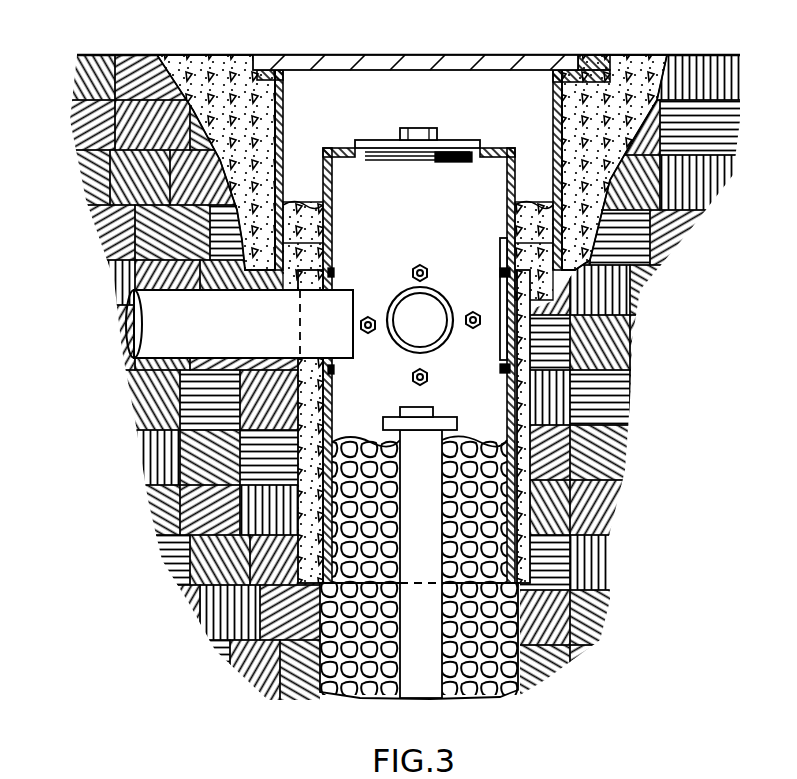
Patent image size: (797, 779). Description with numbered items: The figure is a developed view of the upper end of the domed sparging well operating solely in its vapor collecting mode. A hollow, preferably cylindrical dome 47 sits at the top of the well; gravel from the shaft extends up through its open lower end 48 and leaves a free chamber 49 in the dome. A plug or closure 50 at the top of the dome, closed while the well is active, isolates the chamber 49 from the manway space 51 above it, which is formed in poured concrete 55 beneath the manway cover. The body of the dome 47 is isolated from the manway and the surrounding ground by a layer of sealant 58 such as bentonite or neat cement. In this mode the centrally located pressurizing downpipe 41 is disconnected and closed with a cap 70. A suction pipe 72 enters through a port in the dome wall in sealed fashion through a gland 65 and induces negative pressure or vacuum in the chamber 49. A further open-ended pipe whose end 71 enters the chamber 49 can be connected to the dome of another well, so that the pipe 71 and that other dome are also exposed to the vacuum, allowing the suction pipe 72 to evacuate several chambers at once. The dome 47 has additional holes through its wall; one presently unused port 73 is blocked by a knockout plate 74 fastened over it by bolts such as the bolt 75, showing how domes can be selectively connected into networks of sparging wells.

The downpipe 41 is at (415, 698).
The dome 47 is at (516, 156).
The open lower end 48 is at (265, 643).
The chamber 49 is at (152, 452).
The closure 50 is at (373, 140).
The manway space 51 is at (430, 102).
The poured concrete 55 is at (203, 72).
The layer of sealant 58 is at (303, 565).
The gland 65 is at (188, 408).
The cap 70 is at (395, 418).
The open-ended pipe 71 is at (388, 300).
The suction pipe 72 is at (168, 343).
The port 73 is at (502, 312).
The knockout plate 74 is at (538, 335).
The bolt 75 is at (500, 370).